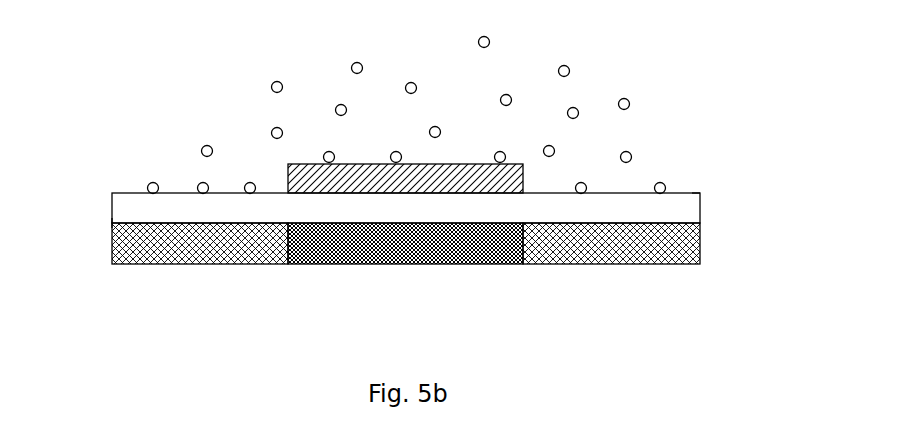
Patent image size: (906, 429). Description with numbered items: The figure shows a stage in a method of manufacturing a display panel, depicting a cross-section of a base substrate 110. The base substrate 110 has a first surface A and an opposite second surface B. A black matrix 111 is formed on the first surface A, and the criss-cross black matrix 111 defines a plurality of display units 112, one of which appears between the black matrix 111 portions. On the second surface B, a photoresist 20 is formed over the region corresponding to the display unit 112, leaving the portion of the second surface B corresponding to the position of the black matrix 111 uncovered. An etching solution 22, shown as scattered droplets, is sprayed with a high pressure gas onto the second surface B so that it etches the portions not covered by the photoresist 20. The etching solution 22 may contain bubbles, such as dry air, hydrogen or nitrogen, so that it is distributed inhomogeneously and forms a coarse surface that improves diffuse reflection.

The photoresist 20 is at (329, 182).
The etching solution 22 is at (629, 106).
The base substrate 110 is at (687, 203).
The black matrix 111 is at (687, 250).
The display unit 112 is at (415, 242).
The first surface A is at (112, 223).
The second surface B is at (700, 193).